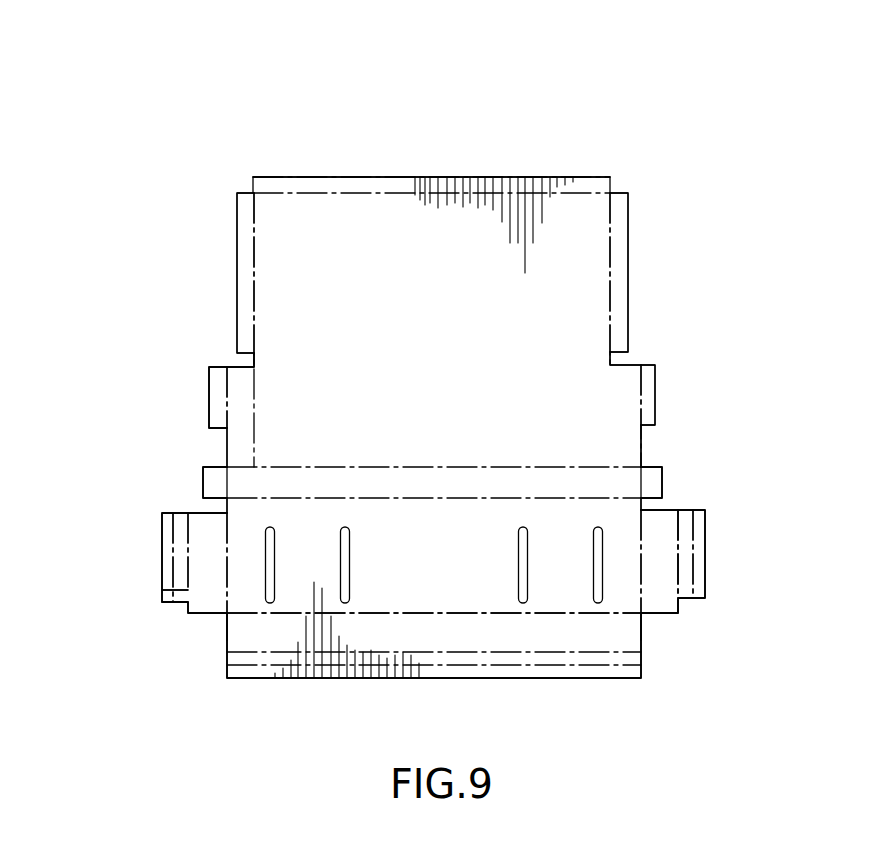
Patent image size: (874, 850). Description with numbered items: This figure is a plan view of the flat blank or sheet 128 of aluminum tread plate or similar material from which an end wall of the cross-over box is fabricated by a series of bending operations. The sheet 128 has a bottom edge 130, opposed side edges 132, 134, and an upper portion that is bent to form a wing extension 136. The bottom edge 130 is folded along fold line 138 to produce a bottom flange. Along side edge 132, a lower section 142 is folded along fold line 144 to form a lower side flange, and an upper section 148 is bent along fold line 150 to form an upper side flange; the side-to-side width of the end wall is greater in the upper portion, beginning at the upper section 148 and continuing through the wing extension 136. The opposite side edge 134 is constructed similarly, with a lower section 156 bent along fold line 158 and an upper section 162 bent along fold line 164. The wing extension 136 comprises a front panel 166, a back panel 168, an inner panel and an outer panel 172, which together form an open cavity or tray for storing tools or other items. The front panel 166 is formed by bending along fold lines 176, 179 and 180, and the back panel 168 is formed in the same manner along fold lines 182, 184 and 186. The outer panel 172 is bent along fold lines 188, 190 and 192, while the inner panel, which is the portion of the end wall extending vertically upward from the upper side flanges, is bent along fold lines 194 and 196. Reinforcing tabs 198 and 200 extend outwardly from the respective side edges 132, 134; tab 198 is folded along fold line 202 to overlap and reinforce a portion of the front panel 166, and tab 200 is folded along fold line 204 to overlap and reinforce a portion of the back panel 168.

The blank or sheet 128 is at (678, 122).
The bottom edge 130 is at (425, 177).
The side edge 132 is at (127, 352).
The side edge 134 is at (703, 290).
The wing extension 136 is at (245, 707).
The fold line 138 is at (360, 193).
The lower section 142 is at (237, 262).
The fold line 144 is at (253, 217).
The upper section 148 is at (209, 388).
The fold line 150 is at (209, 418).
The lower section 156 is at (628, 247).
The fold line 158 is at (610, 207).
The upper section 162 is at (655, 395).
The fold line 164 is at (641, 367).
The front panel 166 is at (135, 580).
The back panel 168 is at (733, 563).
The outer panel 172 is at (573, 692).
The fold line 176 is at (168, 542).
The tab 179 is at (162, 590).
The fold line 180 is at (227, 600).
The fold line 182 is at (700, 517).
The fold line 184 is at (680, 580).
The fold line 186 is at (641, 595).
The fold line 188 is at (325, 672).
The fold line 190 is at (400, 652).
The fold line 192 is at (473, 615).
The fold line 194 is at (390, 467).
The fold line 196 is at (413, 497).
The reinforcing tab 198 is at (203, 467).
The reinforcing tab 200 is at (662, 472).
The fold line 202 is at (213, 485).
The fold line 204 is at (641, 462).